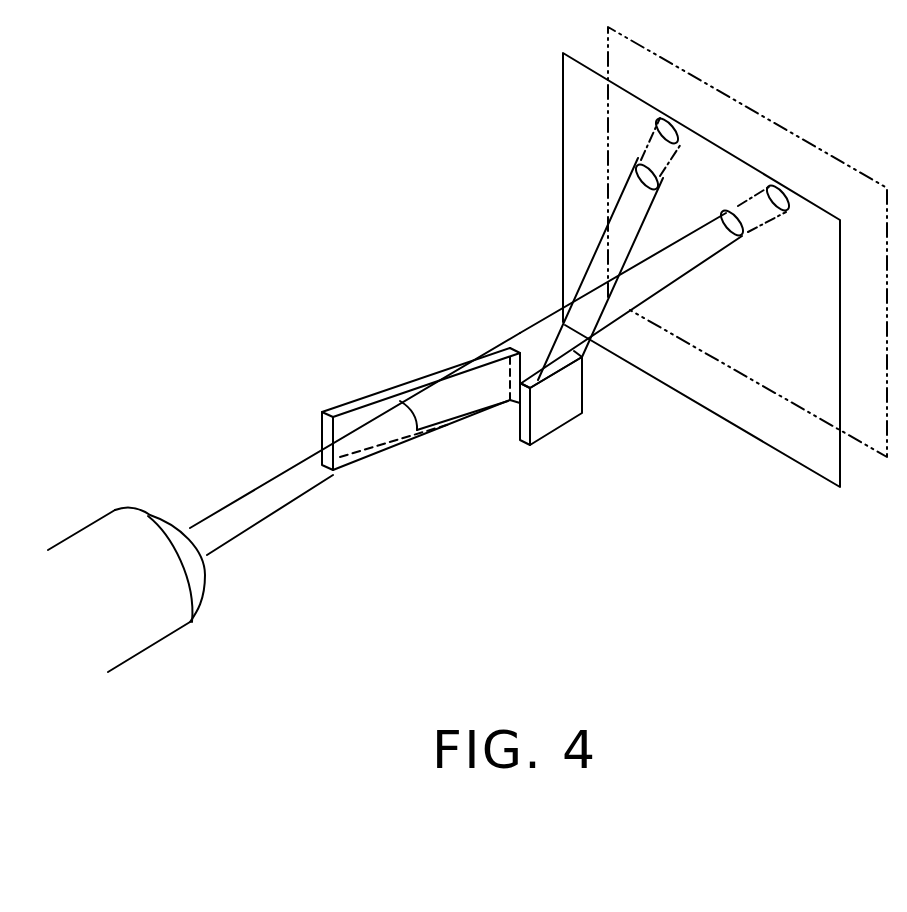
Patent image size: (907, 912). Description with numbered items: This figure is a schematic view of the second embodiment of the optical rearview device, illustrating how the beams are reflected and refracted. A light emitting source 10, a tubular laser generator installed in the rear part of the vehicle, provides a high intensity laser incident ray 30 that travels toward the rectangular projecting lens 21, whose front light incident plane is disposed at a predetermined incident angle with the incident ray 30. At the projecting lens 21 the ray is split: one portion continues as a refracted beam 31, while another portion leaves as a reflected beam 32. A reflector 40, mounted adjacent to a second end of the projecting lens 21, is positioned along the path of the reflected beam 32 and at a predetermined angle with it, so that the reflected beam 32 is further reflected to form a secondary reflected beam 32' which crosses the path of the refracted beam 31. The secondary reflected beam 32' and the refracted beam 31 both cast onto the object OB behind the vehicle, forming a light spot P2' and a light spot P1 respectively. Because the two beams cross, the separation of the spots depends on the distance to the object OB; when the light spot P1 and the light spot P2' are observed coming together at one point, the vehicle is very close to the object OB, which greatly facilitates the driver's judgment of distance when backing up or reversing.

The light emitting source 10 is at (172, 620).
The projecting lens 21 is at (383, 394).
The incident ray 30 is at (284, 502).
The refracted beam 31 is at (531, 332).
The reflected beam 32 is at (531, 462).
The secondary reflected beam 32' is at (550, 269).
The reflector 40 is at (583, 412).
The object OB is at (802, 453).
The light spot P1 is at (742, 237).
The light spot P2' is at (586, 128).